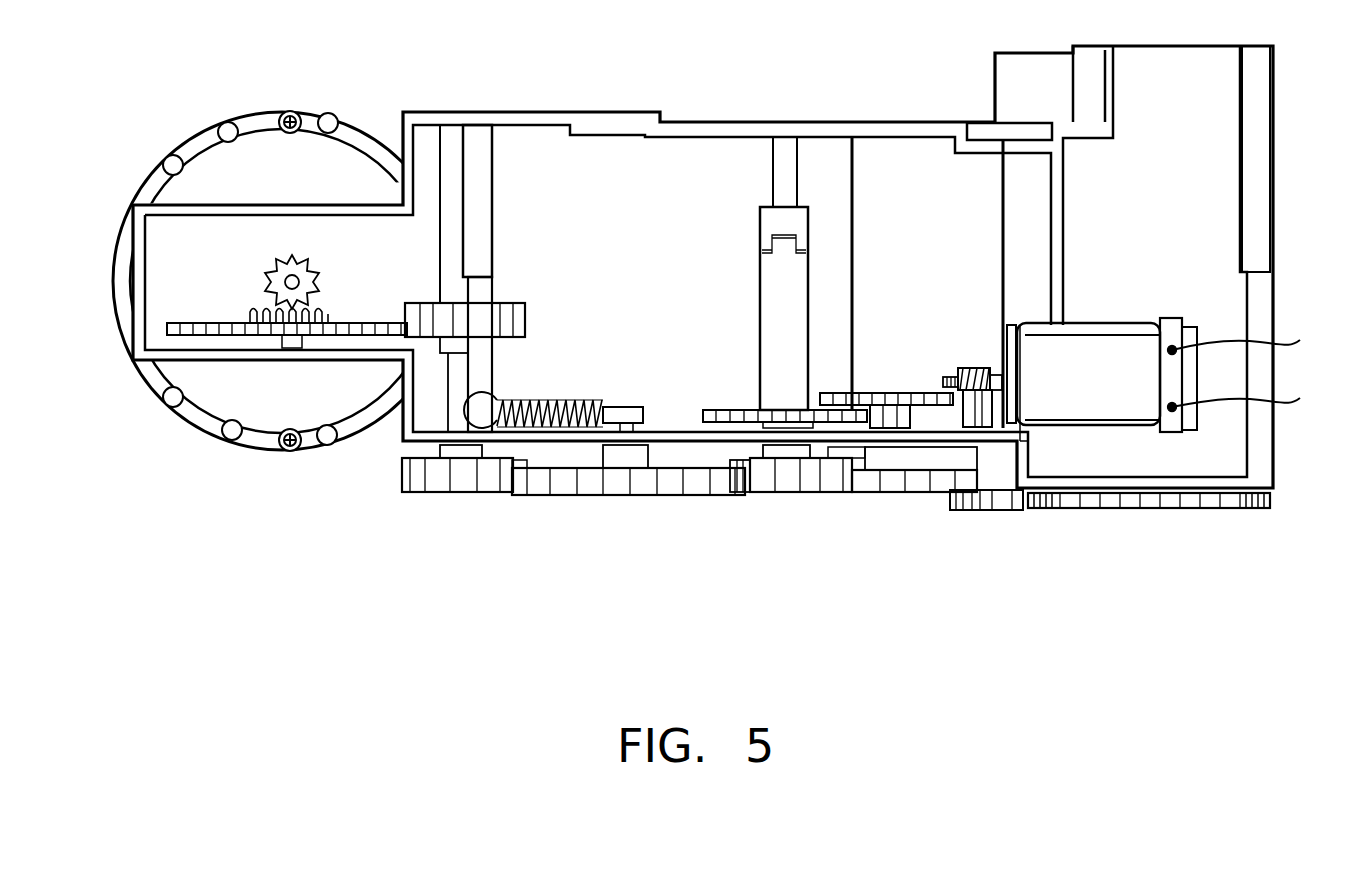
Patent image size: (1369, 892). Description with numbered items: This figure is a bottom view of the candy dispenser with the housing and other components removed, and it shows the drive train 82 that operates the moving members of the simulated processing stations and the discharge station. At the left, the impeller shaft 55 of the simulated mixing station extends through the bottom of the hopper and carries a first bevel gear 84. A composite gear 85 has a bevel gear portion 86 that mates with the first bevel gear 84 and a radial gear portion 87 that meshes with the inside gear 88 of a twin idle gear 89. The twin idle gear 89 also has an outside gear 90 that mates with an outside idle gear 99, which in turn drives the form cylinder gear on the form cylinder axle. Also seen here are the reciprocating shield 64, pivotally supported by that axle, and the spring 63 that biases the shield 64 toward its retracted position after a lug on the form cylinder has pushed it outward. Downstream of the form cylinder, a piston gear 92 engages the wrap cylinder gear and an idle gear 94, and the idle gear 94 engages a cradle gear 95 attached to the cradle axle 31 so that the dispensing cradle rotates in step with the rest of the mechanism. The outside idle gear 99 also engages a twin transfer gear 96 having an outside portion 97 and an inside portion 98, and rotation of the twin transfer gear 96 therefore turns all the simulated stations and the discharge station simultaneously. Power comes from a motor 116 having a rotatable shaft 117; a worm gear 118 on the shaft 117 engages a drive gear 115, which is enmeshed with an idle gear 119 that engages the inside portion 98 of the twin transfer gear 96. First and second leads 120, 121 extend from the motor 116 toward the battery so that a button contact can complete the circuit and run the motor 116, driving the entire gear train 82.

The cradle axle 31 is at (1150, 500).
The impeller shaft 55 is at (299, 277).
The spring 63 is at (532, 400).
The reciprocating shield 64 is at (626, 407).
The drive train 82 is at (398, 483).
The first bevel gear 84 is at (310, 283).
The composite gear 85 is at (203, 323).
The bevel gear portion 86 is at (323, 320).
The radial gear portion 87 is at (167, 328).
The inside gear 88 is at (513, 318).
The twin idle gear 89 is at (496, 296).
The outside gear 90 is at (463, 480).
The piston gear 92 is at (920, 482).
The idle gear 94 is at (1003, 497).
The cradle gear 95 is at (1242, 502).
The twin transfer gear 96 is at (832, 497).
The outside portion 97 is at (790, 480).
The inside portion 98 is at (718, 410).
The outside idle gear 99 is at (620, 480).
The drive gear 115 is at (943, 384).
The motor 116 is at (1135, 350).
The shaft 117 is at (1004, 325).
The worm gear 118 is at (974, 368).
The idle gear 119 is at (878, 393).
The first lead 120 is at (1300, 340).
The second lead 121 is at (1300, 398).